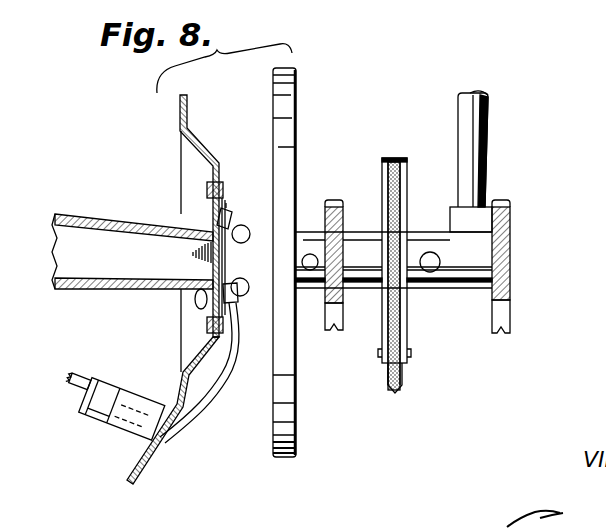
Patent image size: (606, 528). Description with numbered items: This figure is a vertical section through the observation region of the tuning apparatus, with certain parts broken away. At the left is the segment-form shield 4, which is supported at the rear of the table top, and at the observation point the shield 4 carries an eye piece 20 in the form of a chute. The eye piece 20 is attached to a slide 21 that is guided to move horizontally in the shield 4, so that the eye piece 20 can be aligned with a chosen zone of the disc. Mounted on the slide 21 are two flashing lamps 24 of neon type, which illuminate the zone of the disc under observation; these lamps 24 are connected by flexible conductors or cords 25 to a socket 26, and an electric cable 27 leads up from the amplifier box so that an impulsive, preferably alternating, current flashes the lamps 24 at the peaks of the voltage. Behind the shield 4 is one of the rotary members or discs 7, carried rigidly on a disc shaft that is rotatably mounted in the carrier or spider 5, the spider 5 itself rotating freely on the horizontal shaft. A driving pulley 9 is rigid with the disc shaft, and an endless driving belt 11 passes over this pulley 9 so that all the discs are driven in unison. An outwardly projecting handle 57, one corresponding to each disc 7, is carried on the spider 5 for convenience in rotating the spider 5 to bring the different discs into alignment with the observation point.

The shield 4 is at (180, 117).
The eye piece 20 is at (125, 219).
The slide 21 is at (207, 213).
The flashing lamps 24 is at (257, 257).
The flexible conductors 25 is at (232, 407).
The socket 26 is at (138, 410).
The electric cable 27 is at (64, 390).
The disc 7 is at (296, 380).
The driving pulley 9 is at (407, 312).
The endless driving belt 11 is at (401, 373).
The spider 5 is at (512, 222).
The handle 57 is at (473, 123).